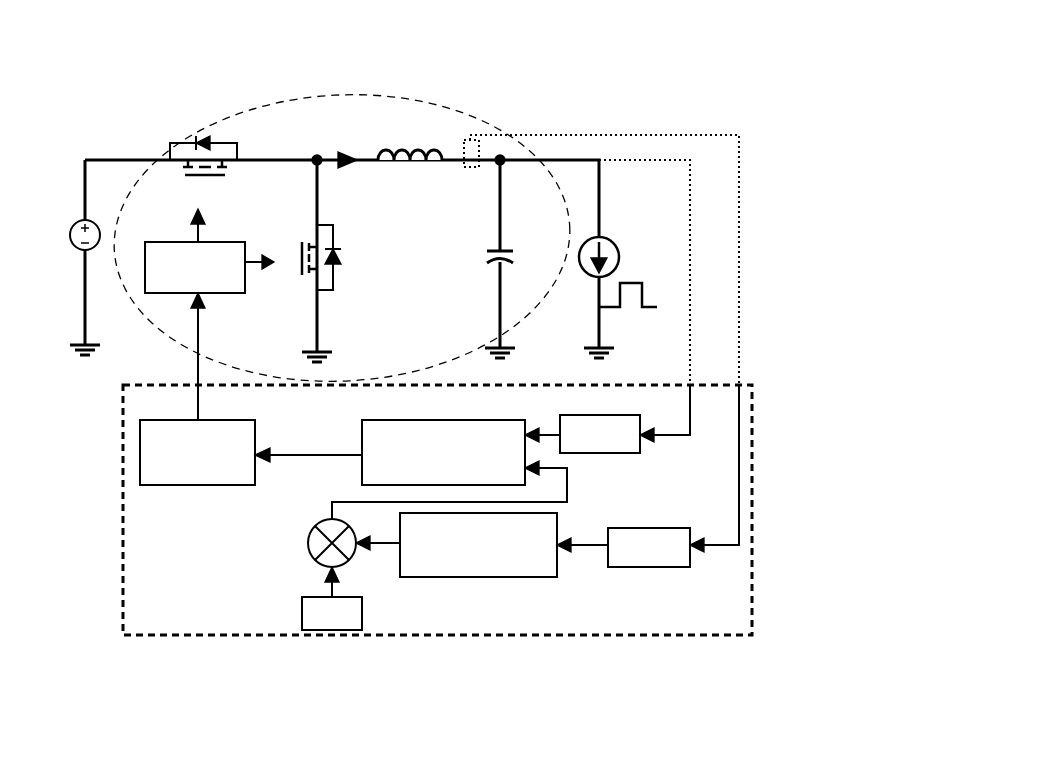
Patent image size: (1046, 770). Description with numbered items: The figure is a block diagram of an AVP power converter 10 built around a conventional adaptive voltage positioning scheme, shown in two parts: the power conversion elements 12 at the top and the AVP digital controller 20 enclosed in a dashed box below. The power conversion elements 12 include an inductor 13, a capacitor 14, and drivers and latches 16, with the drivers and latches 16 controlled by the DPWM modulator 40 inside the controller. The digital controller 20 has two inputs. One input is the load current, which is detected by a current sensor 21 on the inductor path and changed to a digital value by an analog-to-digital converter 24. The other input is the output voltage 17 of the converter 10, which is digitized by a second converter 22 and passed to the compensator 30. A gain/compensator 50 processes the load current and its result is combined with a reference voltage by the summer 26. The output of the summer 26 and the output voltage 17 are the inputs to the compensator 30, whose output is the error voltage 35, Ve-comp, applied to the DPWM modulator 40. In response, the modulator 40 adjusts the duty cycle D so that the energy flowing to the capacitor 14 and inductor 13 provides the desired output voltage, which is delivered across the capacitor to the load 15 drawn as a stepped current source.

The AVP power converter 10 is at (316, 52).
The power conversion elements 12 is at (417, 100).
The inductor 13 is at (415, 165).
The capacitor 14 is at (493, 267).
The load current source Io 15 is at (599, 205).
The drivers and latches 16 is at (188, 228).
The output voltage 17 is at (690, 320).
The AVP digital controller 20 is at (752, 505).
The current sensor 21 is at (468, 170).
The ADC1 analog-to-digital converter 22 is at (643, 450).
The analog-to-digital converter 24 is at (690, 556).
The summer 26 is at (308, 537).
The compensator 30 is at (432, 420).
The error voltage 35 is at (307, 432).
The DPWM modulator 40 is at (145, 418).
The gain/compensator 50 is at (487, 577).